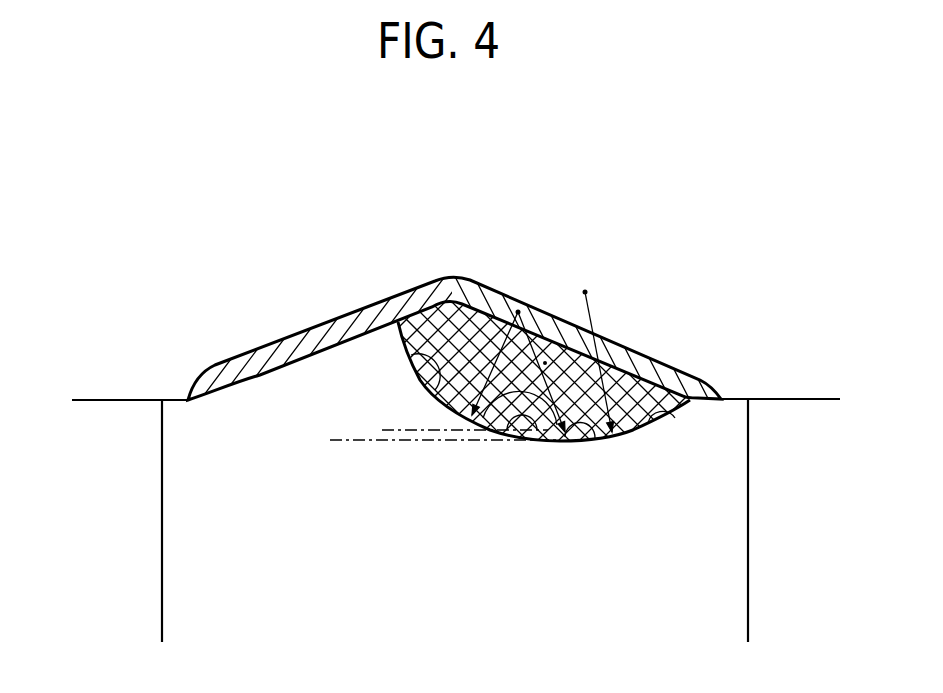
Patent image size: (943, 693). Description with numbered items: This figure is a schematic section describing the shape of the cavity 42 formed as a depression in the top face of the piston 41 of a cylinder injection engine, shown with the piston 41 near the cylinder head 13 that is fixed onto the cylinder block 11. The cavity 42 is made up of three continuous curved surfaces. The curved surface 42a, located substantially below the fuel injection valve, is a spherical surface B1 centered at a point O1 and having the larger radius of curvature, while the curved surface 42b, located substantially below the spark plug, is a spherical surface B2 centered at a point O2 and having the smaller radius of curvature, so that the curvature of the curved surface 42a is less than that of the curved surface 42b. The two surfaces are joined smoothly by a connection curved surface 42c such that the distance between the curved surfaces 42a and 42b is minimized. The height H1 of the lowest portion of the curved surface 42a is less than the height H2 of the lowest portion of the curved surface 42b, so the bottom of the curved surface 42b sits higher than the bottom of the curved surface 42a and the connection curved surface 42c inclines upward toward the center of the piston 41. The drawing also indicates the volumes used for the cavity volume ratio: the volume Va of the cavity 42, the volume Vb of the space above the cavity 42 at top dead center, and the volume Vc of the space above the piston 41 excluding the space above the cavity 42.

The cylinder block 11 is at (112, 507).
The cylinder head 13 is at (192, 315).
The piston 41 is at (752, 539).
The cavity 42 is at (593, 442).
The curved surface 42a is at (665, 413).
The curved surface 42b is at (422, 398).
The connection curved surface 42c is at (533, 440).
The spherical surface B1 is at (537, 440).
The spherical surface B2 is at (484, 425).
The height of the lowest portion of the curved surface 42a H1 is at (342, 403).
The height of the lowest portion of the curved surface 42b H2 is at (388, 388).
The center point of spherical surface B1 O1 is at (605, 288).
The center point of spherical surface B2 O2 is at (518, 310).
The volume of the cavity Va is at (545, 363).
The volume of the space above the cavity Vb is at (683, 377).
The volume of the space above the piston excluding the space above the cavity Vc is at (268, 358).